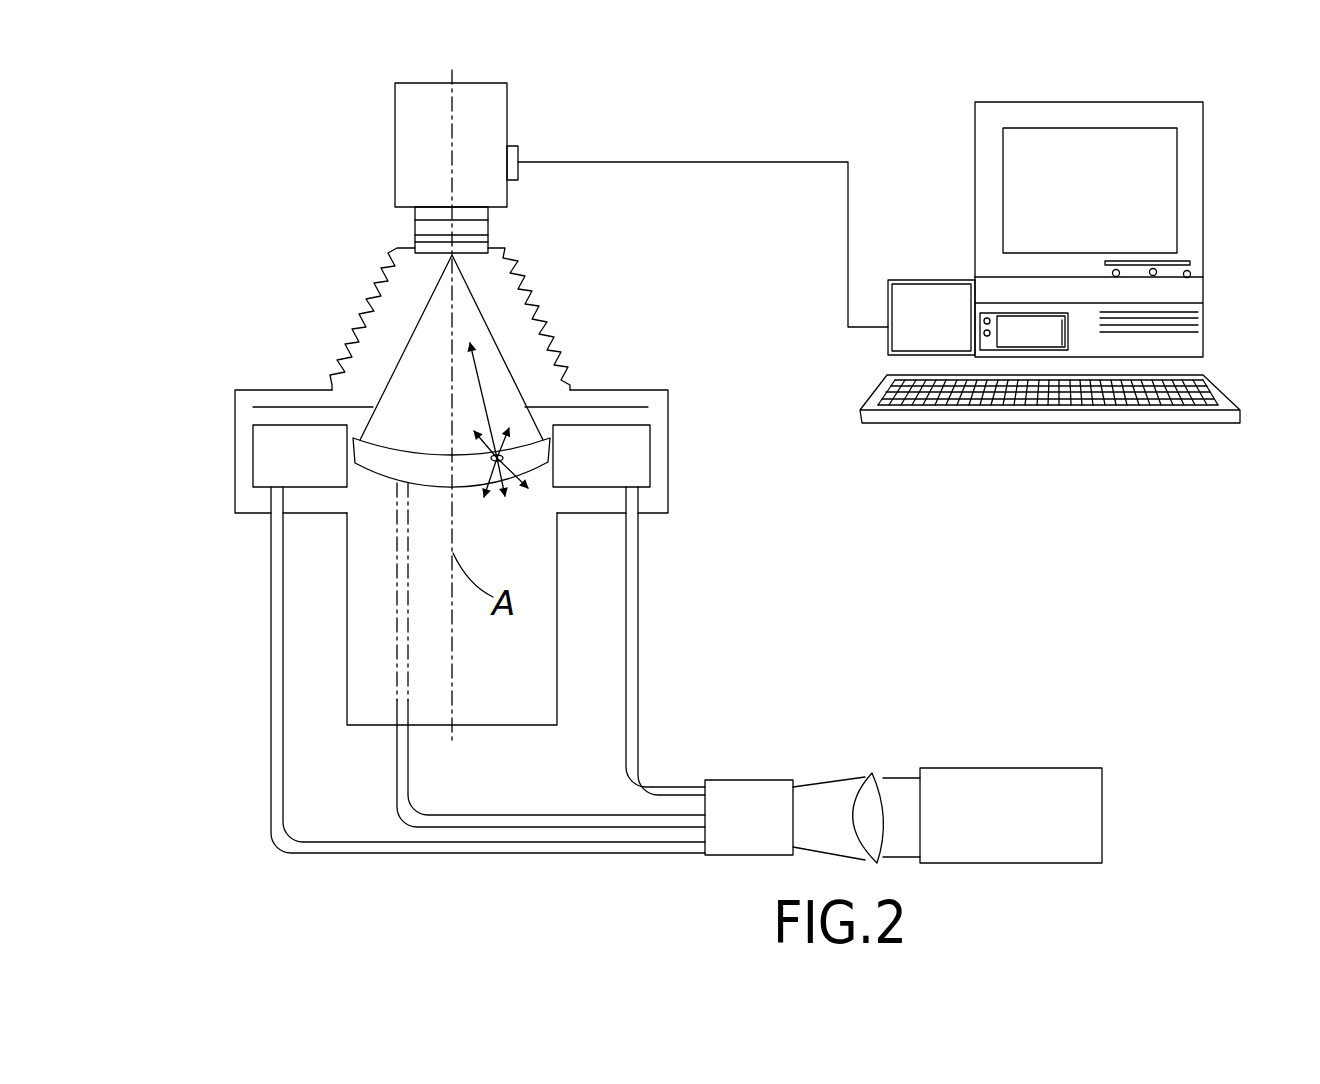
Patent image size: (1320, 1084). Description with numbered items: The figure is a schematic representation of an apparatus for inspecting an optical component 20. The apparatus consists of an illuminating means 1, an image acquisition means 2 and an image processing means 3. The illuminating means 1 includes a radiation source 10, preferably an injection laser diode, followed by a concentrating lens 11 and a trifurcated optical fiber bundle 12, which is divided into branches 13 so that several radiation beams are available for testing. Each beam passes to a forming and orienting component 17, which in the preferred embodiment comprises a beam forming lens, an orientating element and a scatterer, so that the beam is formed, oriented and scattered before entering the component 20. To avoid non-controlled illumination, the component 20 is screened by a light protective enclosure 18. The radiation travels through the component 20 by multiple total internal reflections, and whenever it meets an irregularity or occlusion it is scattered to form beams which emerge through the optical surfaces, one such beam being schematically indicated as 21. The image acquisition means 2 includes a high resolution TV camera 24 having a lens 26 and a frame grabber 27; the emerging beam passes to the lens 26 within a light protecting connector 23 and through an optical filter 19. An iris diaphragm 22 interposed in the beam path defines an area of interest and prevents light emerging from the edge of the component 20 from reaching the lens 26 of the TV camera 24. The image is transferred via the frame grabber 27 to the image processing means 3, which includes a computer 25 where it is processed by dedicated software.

The illuminating means 1 is at (920, 630).
The image acquisition means 2 is at (306, 110).
The image processing means 3 is at (812, 106).
The radiation source 10 is at (995, 800).
The concentrating lens 11 is at (868, 807).
The trifurcated optical fiber bundle 12 is at (757, 800).
The branches 13 is at (663, 853).
The forming and orienting component 17 is at (272, 457).
The light protective enclosure 18 is at (347, 604).
The optical filter 19 is at (482, 242).
The optical component 20 is at (390, 468).
The scattered beam 21 is at (485, 400).
The iris diaphragm 22 is at (287, 408).
The light protecting connector 23 is at (353, 330).
The TV camera 24 is at (405, 172).
The computer 25 is at (1205, 202).
The lens 26 is at (418, 236).
The frame grabber 27 is at (945, 317).